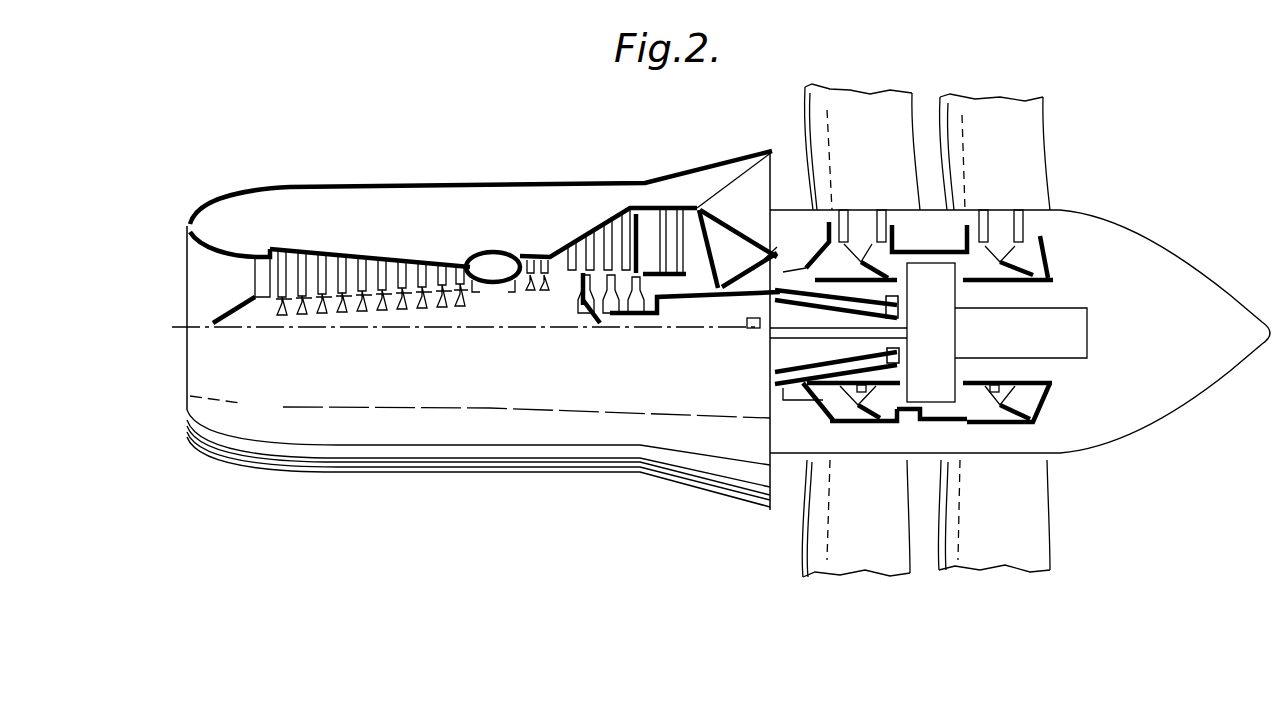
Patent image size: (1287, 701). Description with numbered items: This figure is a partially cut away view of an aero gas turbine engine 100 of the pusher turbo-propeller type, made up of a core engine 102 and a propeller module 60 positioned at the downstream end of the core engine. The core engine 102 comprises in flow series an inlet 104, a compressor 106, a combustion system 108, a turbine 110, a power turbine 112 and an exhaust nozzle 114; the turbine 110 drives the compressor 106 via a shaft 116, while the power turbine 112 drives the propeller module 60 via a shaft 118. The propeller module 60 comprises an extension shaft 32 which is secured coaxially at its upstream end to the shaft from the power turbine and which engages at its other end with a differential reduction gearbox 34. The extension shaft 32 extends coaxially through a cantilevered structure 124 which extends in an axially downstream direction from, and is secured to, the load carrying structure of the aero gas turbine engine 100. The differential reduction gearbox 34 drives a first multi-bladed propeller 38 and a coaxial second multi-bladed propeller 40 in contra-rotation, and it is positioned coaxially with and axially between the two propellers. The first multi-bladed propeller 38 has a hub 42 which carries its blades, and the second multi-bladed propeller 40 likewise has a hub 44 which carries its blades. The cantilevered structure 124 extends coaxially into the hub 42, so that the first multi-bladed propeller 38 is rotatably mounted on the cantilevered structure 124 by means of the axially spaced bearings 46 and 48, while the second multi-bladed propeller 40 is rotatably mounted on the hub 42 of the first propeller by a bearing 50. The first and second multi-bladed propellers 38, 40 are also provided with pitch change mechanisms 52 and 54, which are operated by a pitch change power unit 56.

The aero gas turbine engine 100 is at (481, 175).
The core engine 102 is at (457, 181).
The inlet 104 is at (186, 259).
The compressor 106 is at (333, 262).
The combustion system 108 is at (483, 252).
The turbine 110 is at (539, 263).
The power turbine 112 is at (614, 240).
The exhaust nozzle 114 is at (764, 166).
The shaft 116 is at (497, 300).
The shaft 118 is at (616, 333).
The cantilevered structure 124 is at (755, 272).
The extension shaft 32 is at (778, 333).
The differential reduction gearbox 34 is at (950, 341).
The first multi-bladed propeller 38 is at (849, 100).
The second multi-bladed propeller 40 is at (987, 108).
The hub 42 is at (830, 423).
The hub 44 is at (1010, 428).
The bearing 46 is at (788, 273).
The bearing 48 is at (899, 307).
The bearing 50 is at (908, 428).
The pitch change mechanism 52 is at (864, 236).
The pitch change mechanism 54 is at (1048, 240).
The pitch change power unit 56 is at (1077, 318).
The propeller module 60 is at (894, 478).